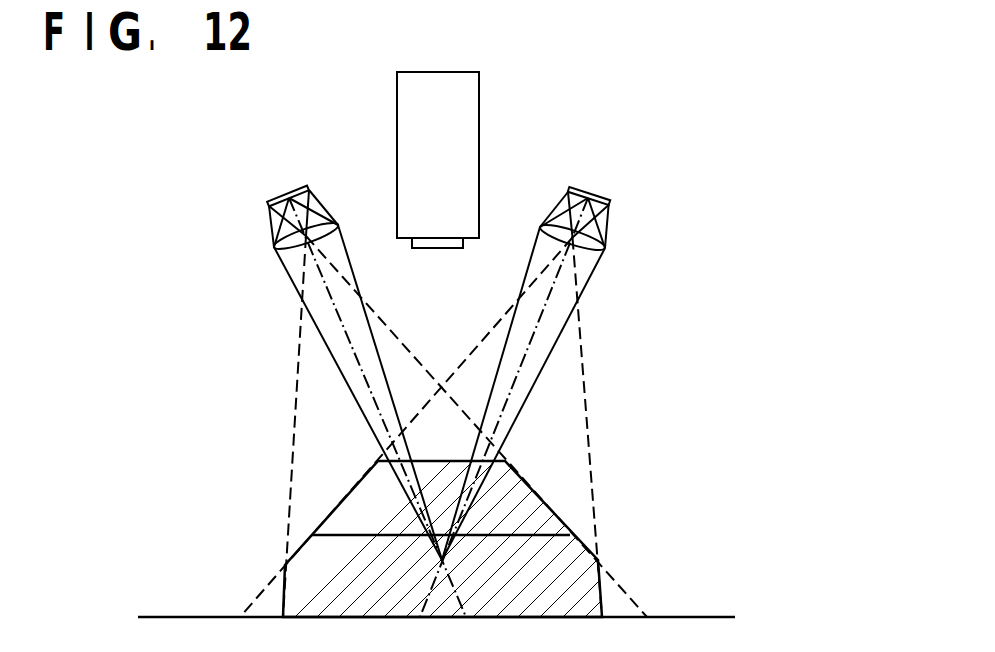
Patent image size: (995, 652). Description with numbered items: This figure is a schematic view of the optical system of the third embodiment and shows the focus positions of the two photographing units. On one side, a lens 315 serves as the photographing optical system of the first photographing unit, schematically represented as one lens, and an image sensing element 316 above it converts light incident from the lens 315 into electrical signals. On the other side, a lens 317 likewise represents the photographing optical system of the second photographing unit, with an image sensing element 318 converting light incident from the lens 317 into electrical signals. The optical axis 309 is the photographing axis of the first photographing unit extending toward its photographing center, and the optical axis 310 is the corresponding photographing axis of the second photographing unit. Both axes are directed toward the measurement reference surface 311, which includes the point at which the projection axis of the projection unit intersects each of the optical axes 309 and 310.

The optical axis 309 is at (352, 352).
The optical axis 310 is at (529, 347).
The measurement reference surface 311 is at (346, 537).
The lens 315 is at (279, 262).
The image sensing element 316 is at (273, 194).
The lens 317 is at (606, 249).
The image sensing element 318 is at (585, 192).